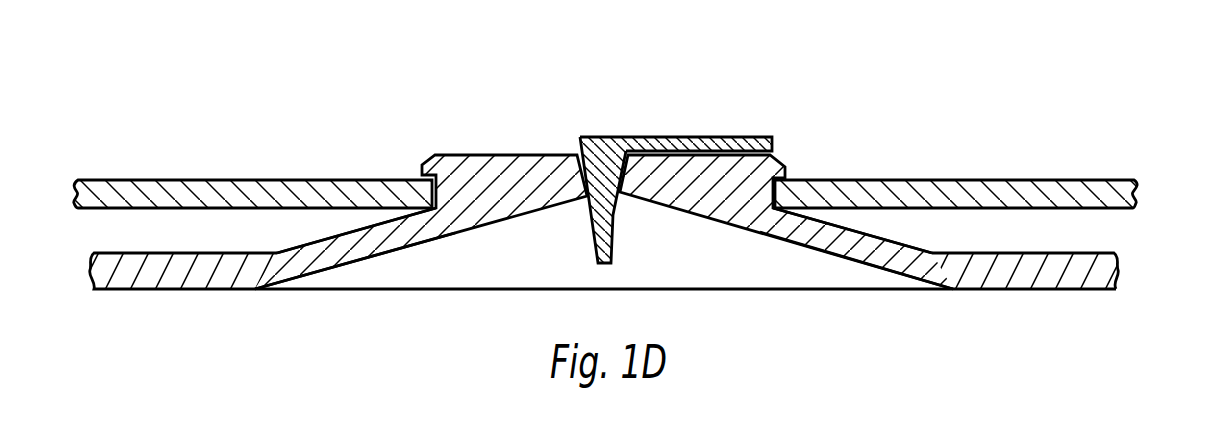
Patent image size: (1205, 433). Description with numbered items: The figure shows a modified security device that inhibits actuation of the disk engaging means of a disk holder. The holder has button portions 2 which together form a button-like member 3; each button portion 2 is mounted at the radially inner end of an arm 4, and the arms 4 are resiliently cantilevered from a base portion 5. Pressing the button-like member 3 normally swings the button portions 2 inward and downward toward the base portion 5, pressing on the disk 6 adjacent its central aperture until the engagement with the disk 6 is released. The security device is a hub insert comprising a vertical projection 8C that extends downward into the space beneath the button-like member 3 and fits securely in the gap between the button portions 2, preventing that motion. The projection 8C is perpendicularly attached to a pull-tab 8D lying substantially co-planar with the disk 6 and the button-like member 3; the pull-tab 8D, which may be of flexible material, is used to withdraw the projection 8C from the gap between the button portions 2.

The button portion 2 is at (604, 226).
The button-like member 3 is at (672, 158).
The arm 4 is at (343, 253).
The base portion 5 is at (165, 275).
The disk 6 is at (187, 197).
The vertical projection 8C is at (612, 256).
The pull-tab 8D is at (689, 140).